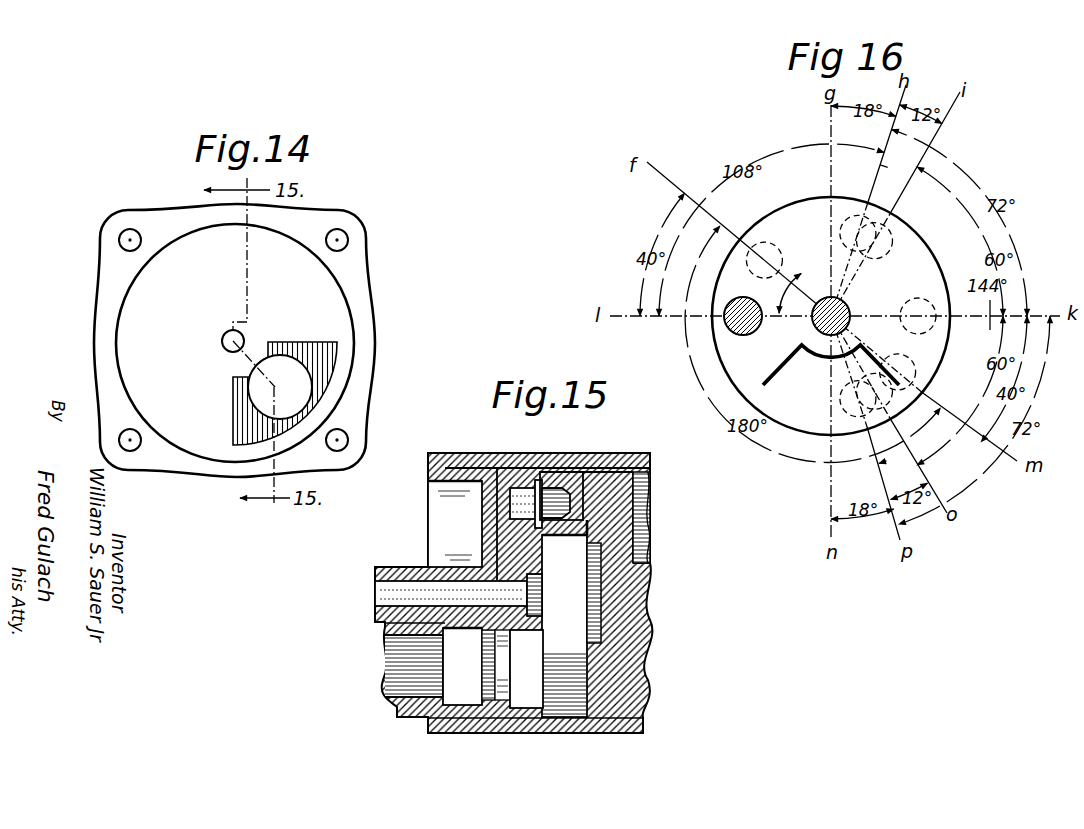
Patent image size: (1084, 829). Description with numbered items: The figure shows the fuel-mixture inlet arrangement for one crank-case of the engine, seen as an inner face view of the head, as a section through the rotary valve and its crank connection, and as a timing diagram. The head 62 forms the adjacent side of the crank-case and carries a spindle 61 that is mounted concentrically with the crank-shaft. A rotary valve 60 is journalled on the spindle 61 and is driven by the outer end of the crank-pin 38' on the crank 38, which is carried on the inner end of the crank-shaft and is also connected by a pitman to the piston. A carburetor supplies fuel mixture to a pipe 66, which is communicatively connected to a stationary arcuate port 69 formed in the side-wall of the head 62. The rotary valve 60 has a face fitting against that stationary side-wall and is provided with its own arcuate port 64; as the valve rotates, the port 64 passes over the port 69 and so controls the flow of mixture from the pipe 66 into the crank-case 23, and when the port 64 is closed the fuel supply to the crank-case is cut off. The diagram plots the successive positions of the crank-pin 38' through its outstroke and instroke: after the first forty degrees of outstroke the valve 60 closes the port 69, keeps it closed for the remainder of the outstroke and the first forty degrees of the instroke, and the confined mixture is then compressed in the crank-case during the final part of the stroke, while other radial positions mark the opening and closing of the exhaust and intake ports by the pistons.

In FIG. 14, the head 62 is at (353, 276).
In FIG. 15, the head 62 is at (436, 462).
In FIG. 14, the arcuate port 69 is at (303, 405).
In FIG. 15, the arcuate port 69 is at (505, 670).
In FIG. 16, the arcuate port 69 is at (893, 320).
In FIG. 15, the crank-case 23 is at (518, 462).
In FIG. 15, the crank-pin 38' is at (577, 467).
In FIG. 16, the crank-pin 38' is at (701, 329).
In FIG. 15, the crank 38 is at (608, 557).
In FIG. 15, the rotary valve 60 is at (513, 543).
In FIG. 15, the spindle 61 is at (385, 589).
In FIG. 16, the spindle 61 is at (843, 308).
In FIG. 15, the pipe 66 is at (490, 652).
In FIG. 15, the arcuate port 64 is at (540, 671).
In FIG. 16, the arcuate port 64 is at (830, 382).